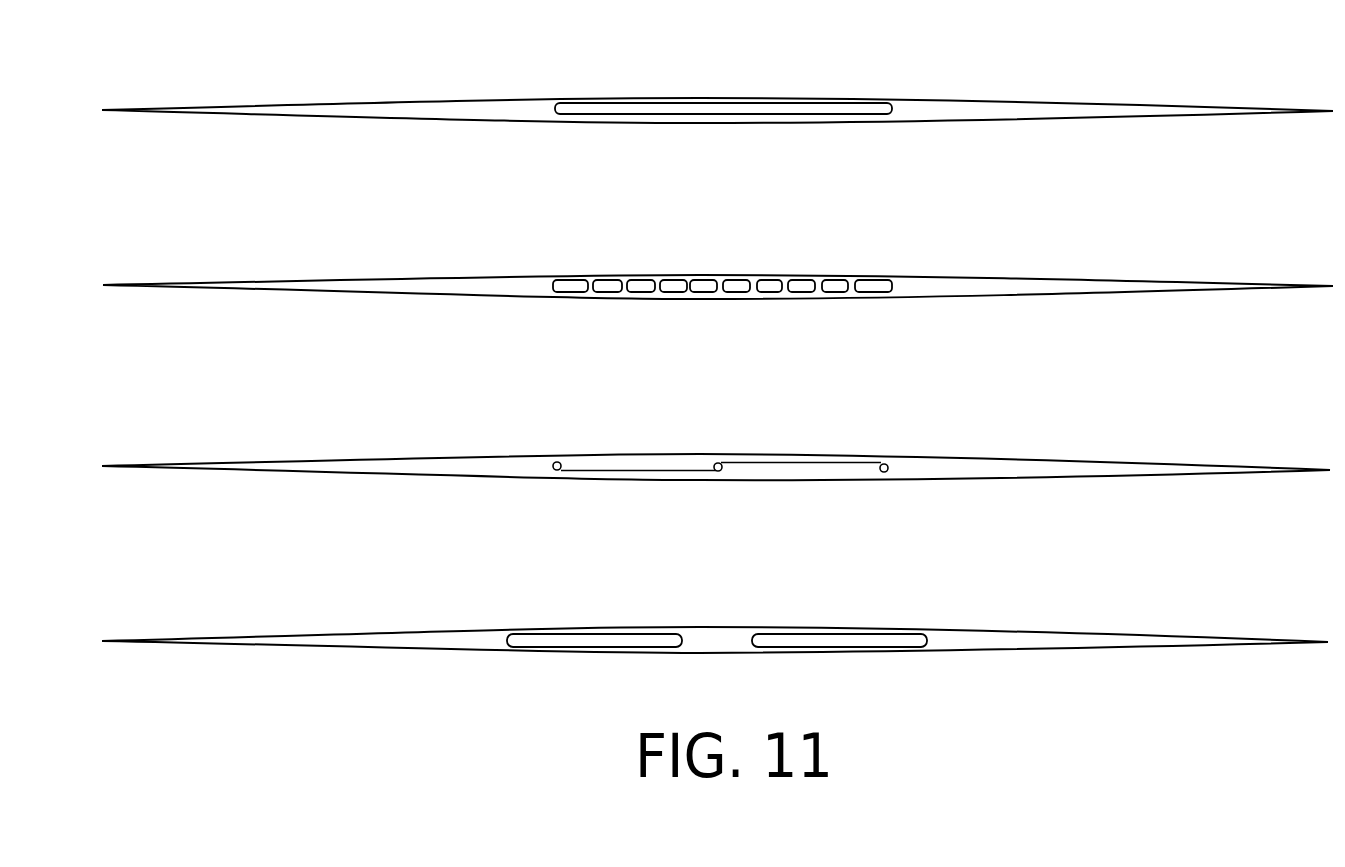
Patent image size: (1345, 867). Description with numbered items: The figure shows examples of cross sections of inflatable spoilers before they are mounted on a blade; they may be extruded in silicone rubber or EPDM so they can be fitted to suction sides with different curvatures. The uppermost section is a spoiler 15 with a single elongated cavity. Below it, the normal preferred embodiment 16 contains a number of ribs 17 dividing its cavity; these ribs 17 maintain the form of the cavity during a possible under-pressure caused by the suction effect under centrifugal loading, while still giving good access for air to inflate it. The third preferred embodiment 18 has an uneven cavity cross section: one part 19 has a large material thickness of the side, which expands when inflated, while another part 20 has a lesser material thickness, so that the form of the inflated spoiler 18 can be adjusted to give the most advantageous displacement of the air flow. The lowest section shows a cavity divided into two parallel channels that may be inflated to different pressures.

The blade with elongated slot 15 is at (939, 108).
The normal preferred embodiment 16 is at (718, 255).
The ribs 17 is at (689, 288).
The third preferred embodiment 18 is at (716, 431).
The part having a large material thickness 19 is at (642, 466).
The part having a lesser material thickness 20 is at (807, 458).